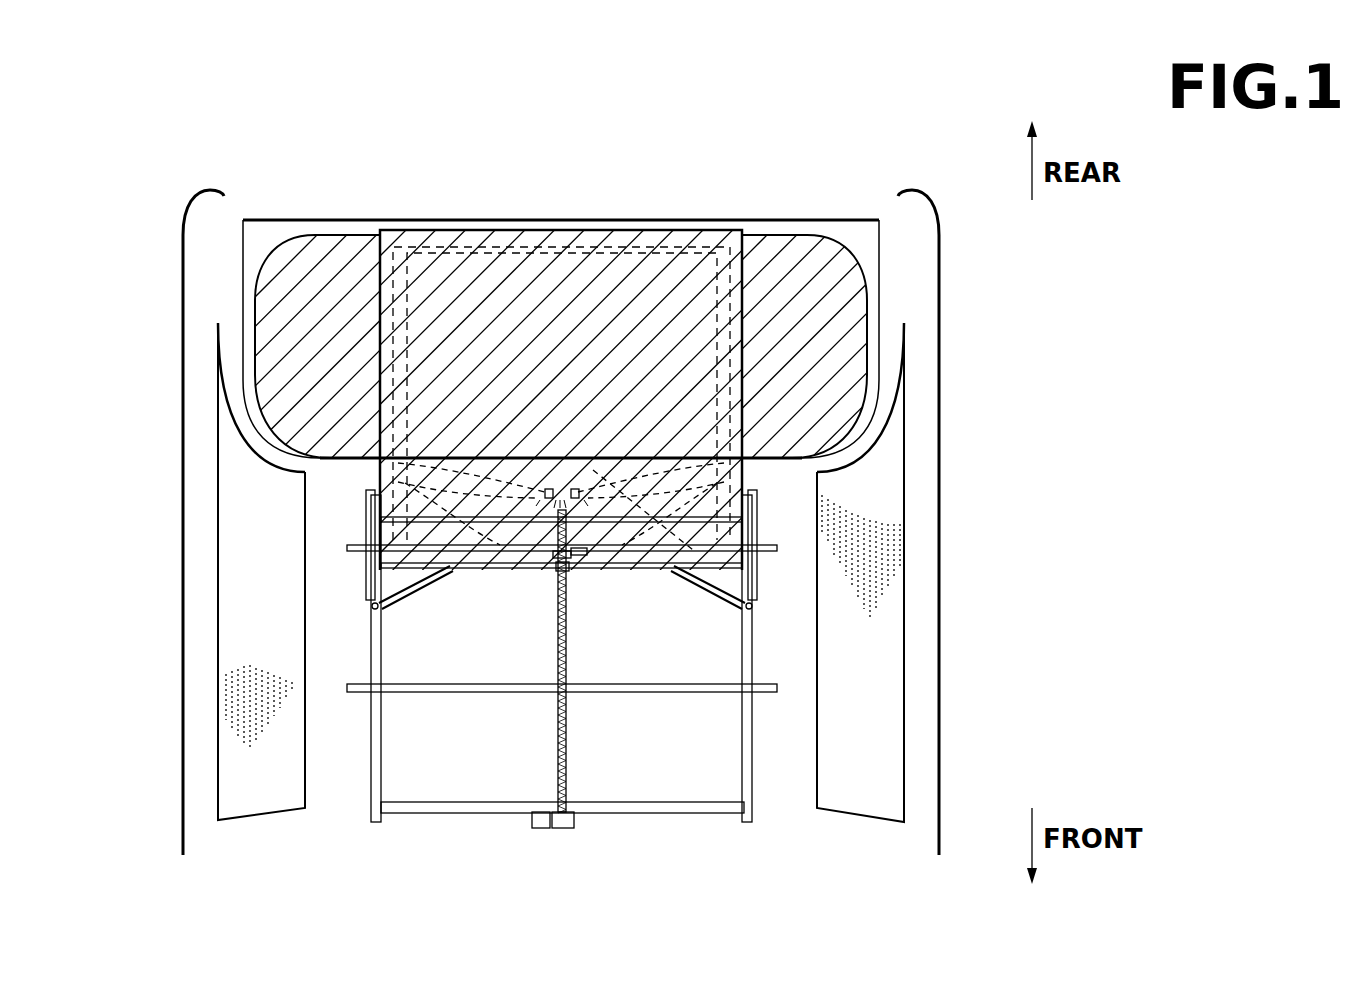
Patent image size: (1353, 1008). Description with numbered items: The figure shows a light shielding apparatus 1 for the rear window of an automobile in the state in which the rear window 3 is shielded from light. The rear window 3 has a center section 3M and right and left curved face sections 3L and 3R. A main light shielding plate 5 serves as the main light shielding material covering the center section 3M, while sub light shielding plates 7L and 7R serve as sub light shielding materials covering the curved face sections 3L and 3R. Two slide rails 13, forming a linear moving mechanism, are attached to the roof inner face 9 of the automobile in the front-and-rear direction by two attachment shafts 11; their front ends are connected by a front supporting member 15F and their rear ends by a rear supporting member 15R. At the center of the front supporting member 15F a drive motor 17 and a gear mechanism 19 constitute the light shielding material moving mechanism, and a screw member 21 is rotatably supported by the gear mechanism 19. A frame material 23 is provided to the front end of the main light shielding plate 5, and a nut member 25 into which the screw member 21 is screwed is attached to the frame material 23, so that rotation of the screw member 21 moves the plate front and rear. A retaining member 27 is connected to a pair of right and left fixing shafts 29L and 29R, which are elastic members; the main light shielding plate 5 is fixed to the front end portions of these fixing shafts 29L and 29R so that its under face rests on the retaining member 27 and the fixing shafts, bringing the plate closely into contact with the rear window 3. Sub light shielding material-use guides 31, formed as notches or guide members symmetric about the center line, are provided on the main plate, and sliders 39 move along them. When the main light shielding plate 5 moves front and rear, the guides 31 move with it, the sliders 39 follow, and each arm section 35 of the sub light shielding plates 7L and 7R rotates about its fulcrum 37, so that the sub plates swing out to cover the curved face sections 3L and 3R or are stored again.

The light shielding apparatus 1 is at (892, 149).
The rear window 3 is at (365, 163).
The left curved face section 3L is at (356, 218).
The center section 3M is at (563, 218).
The right curved face section 3R is at (770, 218).
The main light shielding plate 5 is at (670, 228).
The left sub light shielding plate 7L is at (303, 237).
The right sub light shielding plate 7R is at (832, 237).
The roof inner face 9 is at (790, 638).
The attachment shaft 11 is at (348, 547).
The slide rail 13 is at (375, 824).
The front supporting member 15F is at (678, 814).
The rear supporting member 15R is at (604, 552).
The drive motor 17 is at (540, 829).
The gear mechanism 19 is at (560, 829).
The screw member 21 is at (568, 732).
The frame material 23 is at (648, 569).
The nut member 25 is at (553, 560).
The retaining member 27 is at (478, 247).
The left fixing shaft 29L is at (405, 335).
The right fixing shaft 29R is at (715, 333).
The sub light shielding material-use guide 31 is at (366, 497).
The arm section 35 is at (415, 586).
The fulcrum 37 is at (371, 605).
The slider 39 is at (548, 488).